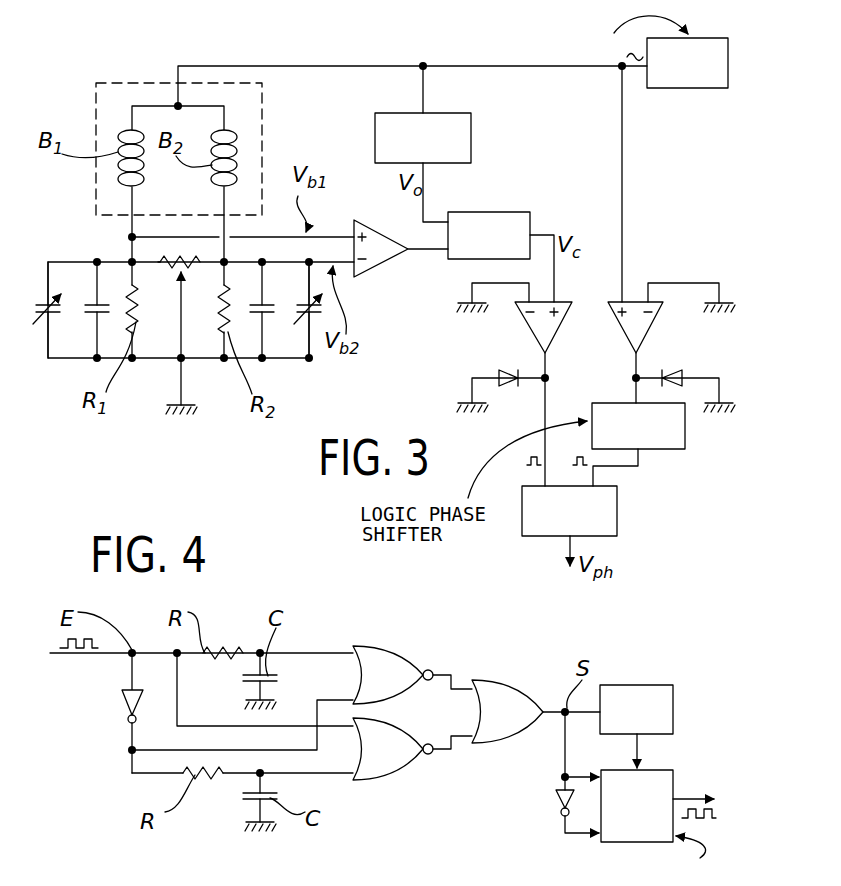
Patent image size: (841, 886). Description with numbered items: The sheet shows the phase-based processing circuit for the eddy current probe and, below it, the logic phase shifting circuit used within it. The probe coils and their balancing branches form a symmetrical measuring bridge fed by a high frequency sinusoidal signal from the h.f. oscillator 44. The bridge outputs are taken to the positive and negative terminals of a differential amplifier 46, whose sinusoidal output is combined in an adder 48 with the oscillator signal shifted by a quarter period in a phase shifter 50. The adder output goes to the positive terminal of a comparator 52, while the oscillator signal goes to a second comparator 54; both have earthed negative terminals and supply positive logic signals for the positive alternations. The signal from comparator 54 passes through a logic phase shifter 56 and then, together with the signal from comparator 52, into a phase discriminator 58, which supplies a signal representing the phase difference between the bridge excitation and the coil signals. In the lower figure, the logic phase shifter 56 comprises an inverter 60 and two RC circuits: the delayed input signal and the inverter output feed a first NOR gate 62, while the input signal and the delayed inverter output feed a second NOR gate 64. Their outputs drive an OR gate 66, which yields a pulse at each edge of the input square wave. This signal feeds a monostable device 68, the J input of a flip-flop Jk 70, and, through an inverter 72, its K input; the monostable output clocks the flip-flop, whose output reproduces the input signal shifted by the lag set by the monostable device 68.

In FIG. 3, the h.f. oscillator 44 is at (680, 88).
In FIG. 3, the differential amplifier 46 is at (383, 258).
In FIG. 3, the adder 48 is at (506, 212).
In FIG. 3, the phase shifter 50 is at (471, 125).
In FIG. 3, the comparator 52 is at (545, 330).
In FIG. 3, the comparator 54 is at (636, 330).
In FIG. 3, the logic phase shifter 56 is at (685, 437).
In FIG. 3, the phase discriminator 58 is at (617, 512).
In FIG. 4, the inverter 60 is at (125, 702).
In FIG. 4, the first NOR gate 62 is at (378, 665).
In FIG. 4, the second NOR gate 64 is at (388, 750).
In FIG. 4, the OR gate 66 is at (500, 693).
In FIG. 4, the monostable device 68 is at (663, 686).
In FIG. 4, the flip-flop Jk 70 is at (665, 777).
In FIG. 4, the inverter 72 is at (556, 798).